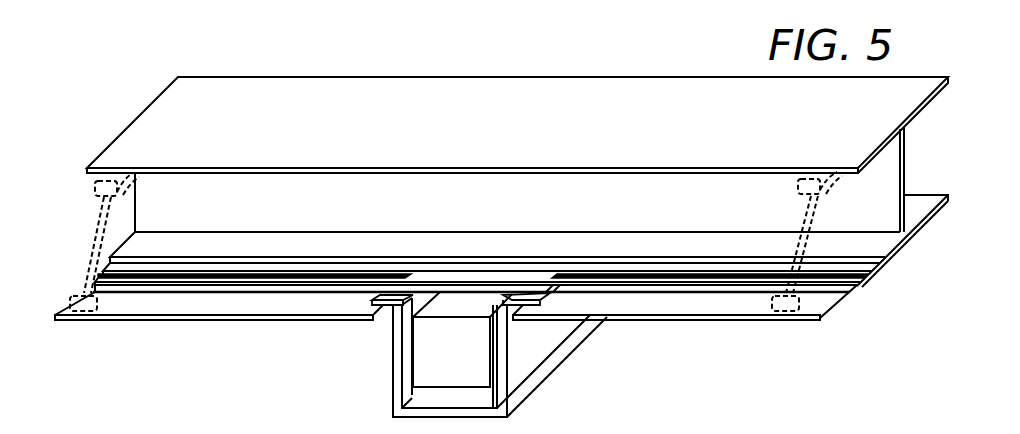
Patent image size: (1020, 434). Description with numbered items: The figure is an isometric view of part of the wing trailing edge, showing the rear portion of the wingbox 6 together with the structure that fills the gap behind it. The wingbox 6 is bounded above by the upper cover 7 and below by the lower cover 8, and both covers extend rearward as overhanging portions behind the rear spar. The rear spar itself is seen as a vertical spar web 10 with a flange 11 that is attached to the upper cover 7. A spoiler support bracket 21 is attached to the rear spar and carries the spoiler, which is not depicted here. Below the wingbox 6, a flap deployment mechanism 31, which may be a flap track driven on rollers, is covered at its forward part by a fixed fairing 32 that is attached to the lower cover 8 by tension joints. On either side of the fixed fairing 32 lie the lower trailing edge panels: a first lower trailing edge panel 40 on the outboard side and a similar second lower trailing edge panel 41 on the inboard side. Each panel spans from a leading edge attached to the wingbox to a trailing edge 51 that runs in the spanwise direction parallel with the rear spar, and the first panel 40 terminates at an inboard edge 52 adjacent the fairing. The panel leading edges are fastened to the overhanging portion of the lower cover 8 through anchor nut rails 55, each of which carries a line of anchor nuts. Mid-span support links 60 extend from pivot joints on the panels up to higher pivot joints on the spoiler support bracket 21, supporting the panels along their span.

The wingbox 6 is at (355, 106).
The upper cover 7 is at (658, 106).
The lower cover 8 is at (853, 293).
The spar web 10 is at (868, 185).
The flange 11 is at (533, 247).
The spoiler support bracket 21 is at (114, 190).
The deployment mechanism 31 is at (458, 302).
The fixed fairing 32 is at (528, 358).
The first lower trailing edge panel 40 is at (299, 305).
The second lower trailing edge panel 41 is at (622, 298).
The trailing edge 51 is at (185, 319).
The inboard edge 52 is at (379, 306).
The anchor nut rail 55 is at (235, 272).
The mid-span support link 60 is at (90, 239).